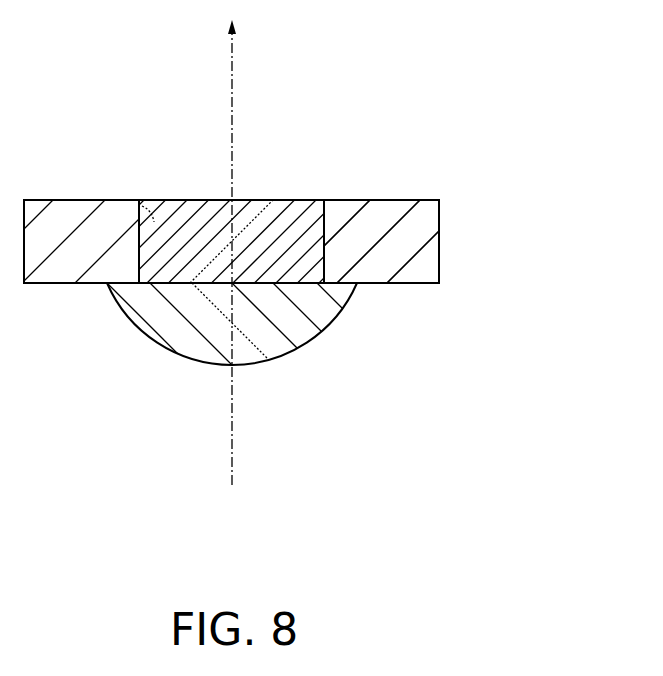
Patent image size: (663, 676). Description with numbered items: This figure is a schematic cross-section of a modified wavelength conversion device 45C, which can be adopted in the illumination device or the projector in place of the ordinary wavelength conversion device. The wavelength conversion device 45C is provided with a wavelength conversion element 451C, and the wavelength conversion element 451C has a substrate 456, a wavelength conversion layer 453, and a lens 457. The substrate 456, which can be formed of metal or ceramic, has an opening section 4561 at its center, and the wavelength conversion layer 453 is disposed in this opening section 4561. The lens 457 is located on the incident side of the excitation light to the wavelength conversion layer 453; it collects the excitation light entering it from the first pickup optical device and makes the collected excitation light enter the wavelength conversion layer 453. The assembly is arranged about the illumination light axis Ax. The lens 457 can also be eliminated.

The wavelength conversion device 45C is at (507, 125).
The wavelength conversion element 451C is at (440, 215).
The wavelength conversion layer 453 is at (283, 214).
The opening section 4561 is at (142, 232).
The substrate 456 is at (418, 272).
The lens 457 is at (140, 332).
The illumination light axis Ax is at (230, 418).